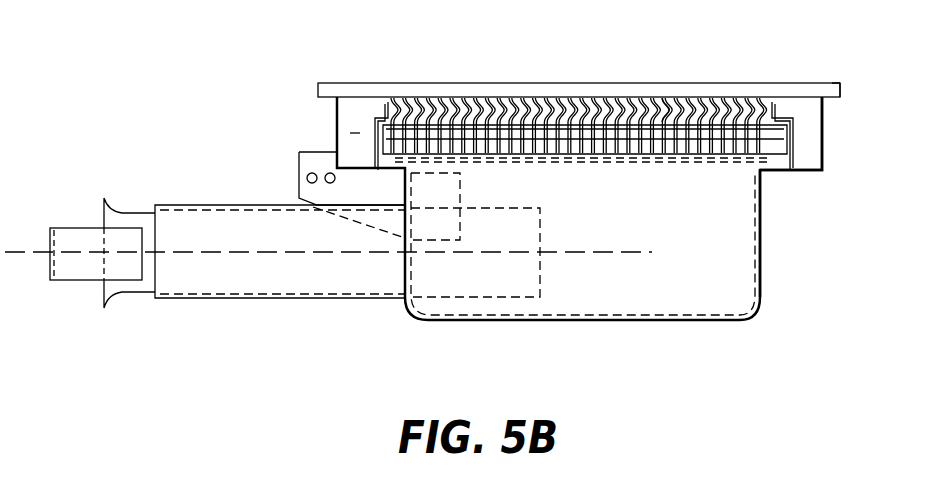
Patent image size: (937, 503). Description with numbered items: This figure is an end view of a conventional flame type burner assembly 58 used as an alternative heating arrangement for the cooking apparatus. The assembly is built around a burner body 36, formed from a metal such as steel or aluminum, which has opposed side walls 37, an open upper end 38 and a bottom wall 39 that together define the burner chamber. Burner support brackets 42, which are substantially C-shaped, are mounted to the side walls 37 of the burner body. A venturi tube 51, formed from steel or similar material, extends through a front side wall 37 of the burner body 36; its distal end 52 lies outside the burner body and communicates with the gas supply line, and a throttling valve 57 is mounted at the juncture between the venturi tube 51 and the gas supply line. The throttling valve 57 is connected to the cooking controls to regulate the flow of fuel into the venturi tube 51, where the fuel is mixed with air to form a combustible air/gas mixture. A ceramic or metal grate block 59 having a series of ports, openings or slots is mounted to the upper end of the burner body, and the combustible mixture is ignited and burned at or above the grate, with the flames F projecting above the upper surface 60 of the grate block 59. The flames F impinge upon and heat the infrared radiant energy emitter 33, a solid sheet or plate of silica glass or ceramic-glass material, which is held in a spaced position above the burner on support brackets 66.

The infrared radiant energy emitter 33 is at (597, 93).
The burner body 36 is at (648, 330).
The side walls 37 is at (762, 262).
The open upper end 38 is at (772, 182).
The bottom wall 39 is at (479, 322).
The burner support brackets 42 is at (788, 158).
The venturi tube 51 is at (208, 285).
The distal end 52 is at (103, 300).
The throttling valve 57 is at (67, 282).
The flame type burner assembly 58 is at (350, 133).
The grate block 59 is at (635, 141).
The upper surface 60 is at (433, 98).
The support brackets 66 is at (838, 97).
The flames F is at (663, 98).